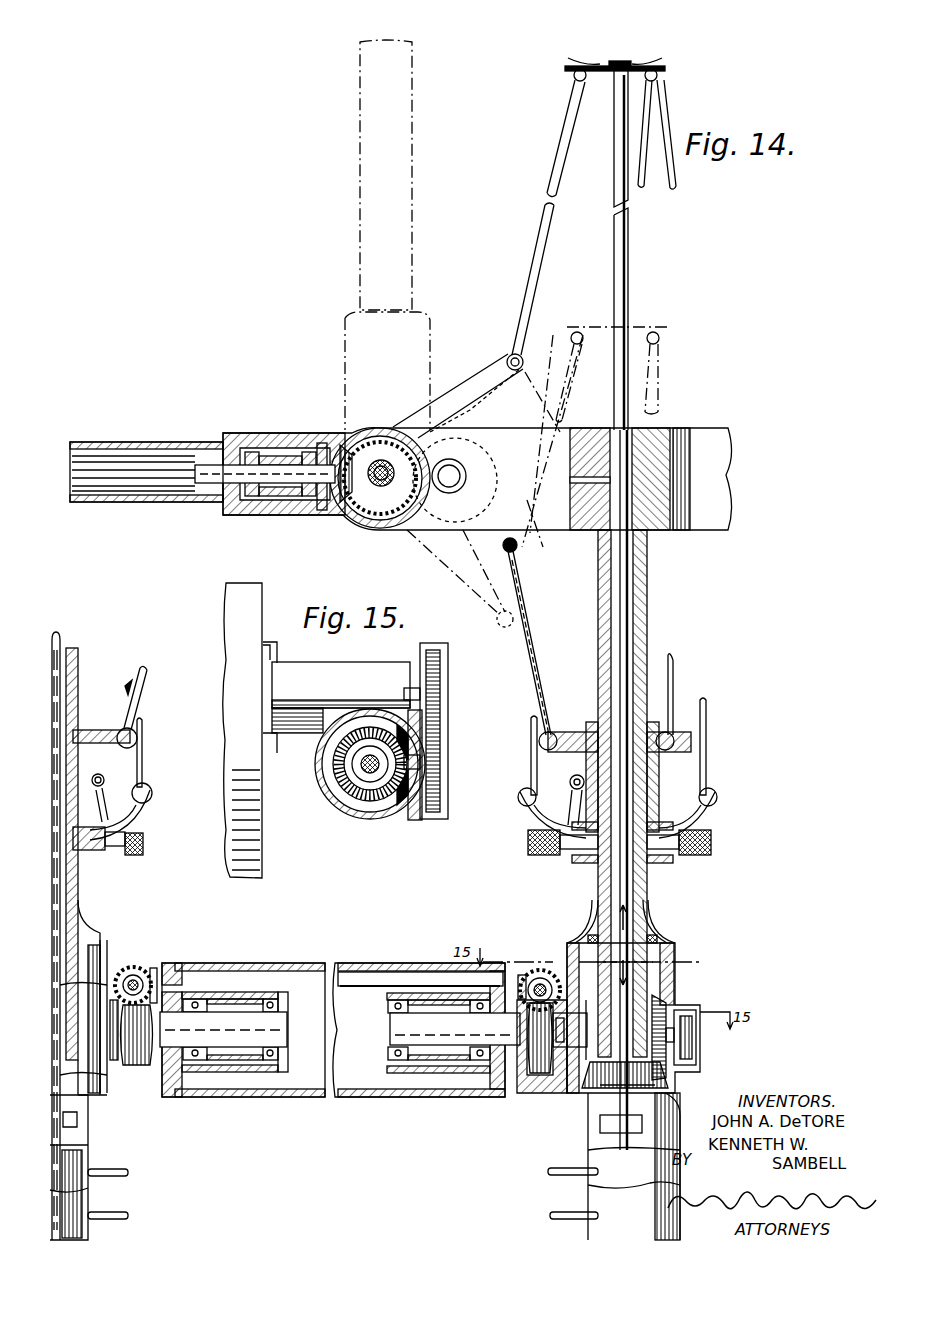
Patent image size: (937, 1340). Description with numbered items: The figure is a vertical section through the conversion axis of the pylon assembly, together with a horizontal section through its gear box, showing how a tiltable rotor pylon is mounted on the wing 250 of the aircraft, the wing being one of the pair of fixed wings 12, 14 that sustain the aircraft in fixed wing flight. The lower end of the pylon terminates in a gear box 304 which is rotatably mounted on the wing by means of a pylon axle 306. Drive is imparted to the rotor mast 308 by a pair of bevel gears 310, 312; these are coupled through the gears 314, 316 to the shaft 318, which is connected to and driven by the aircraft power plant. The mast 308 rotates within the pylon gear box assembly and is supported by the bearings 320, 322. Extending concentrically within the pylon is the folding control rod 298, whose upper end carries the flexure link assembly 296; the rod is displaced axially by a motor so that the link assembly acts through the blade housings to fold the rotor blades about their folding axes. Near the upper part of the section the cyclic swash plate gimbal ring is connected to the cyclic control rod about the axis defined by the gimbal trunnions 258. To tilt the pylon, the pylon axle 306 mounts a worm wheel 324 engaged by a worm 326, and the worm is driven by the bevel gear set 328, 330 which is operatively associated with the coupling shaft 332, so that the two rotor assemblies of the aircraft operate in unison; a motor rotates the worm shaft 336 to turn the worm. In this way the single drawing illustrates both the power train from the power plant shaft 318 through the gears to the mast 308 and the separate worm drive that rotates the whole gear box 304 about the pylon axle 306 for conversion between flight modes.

In FIG. 14, the flexure link assembly 296 is at (638, 64).
In FIG. 14, the folding control rod 298 is at (626, 292).
In FIG. 14, the mast 308 is at (640, 600).
In FIG. 14, the bearing 320 is at (667, 735).
In FIG. 14, the gimbal trunnions 258 is at (568, 850).
In FIG. 14, the bearing 322 is at (655, 935).
In FIG. 14, the gear box 304 is at (670, 965).
In FIG. 15, the gear box 304 is at (336, 810).
In FIG. 14, the bevel gear 312 is at (663, 1005).
In FIG. 15, the bevel gear 312 is at (406, 812).
In FIG. 14, the bevel gear 310 is at (580, 1100).
In FIG. 15, the bevel gear 310 is at (373, 810).
In FIG. 14, the fixed wing 12 is at (226, 963).
In FIG. 14, the fixed wing 14 is at (400, 963).
In FIG. 14, the coupling shaft 332 is at (373, 986).
In FIG. 14, the pylon axle 306 is at (455, 1029).
In FIG. 14, the bevel gear 328 is at (522, 975).
In FIG. 14, the worm 326 is at (538, 972).
In FIG. 14, the bevel gear 330 is at (522, 998).
In FIG. 14, the worm shaft 336 is at (563, 972).
In FIG. 14, the worm wheel 324 is at (545, 1085).
In FIG. 15, the wing 250 is at (262, 827).
In FIG. 15, the shaft 318 is at (415, 690).
In FIG. 15, the gear 316 is at (441, 700).
In FIG. 15, the gear 314 is at (437, 766).